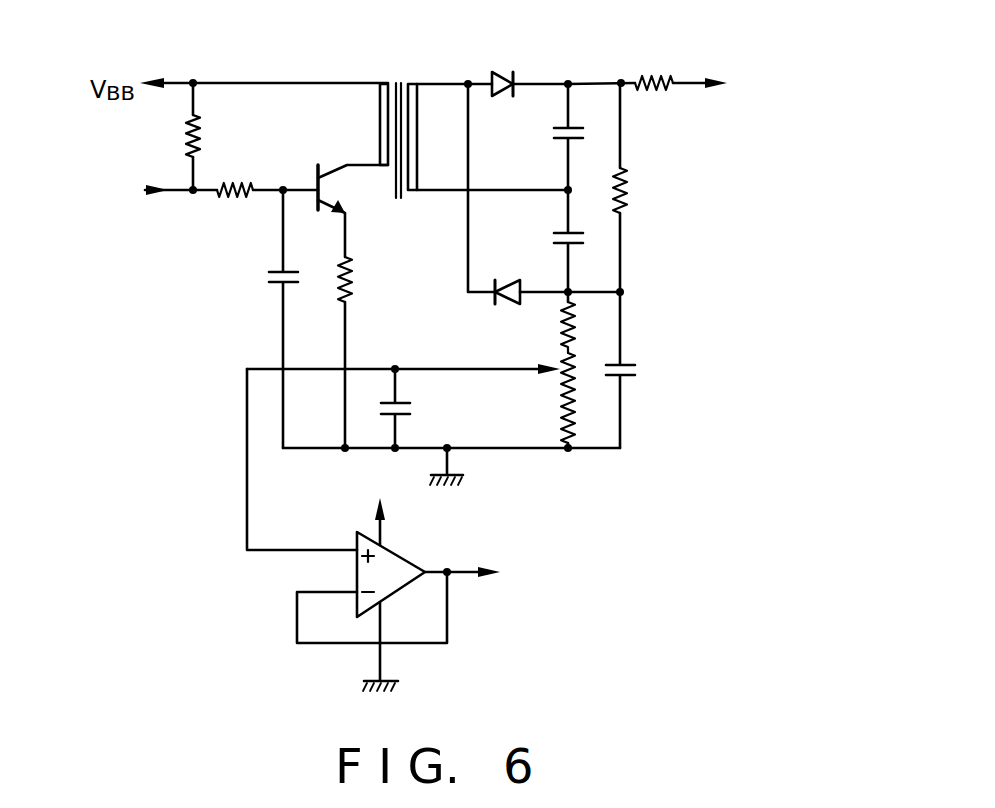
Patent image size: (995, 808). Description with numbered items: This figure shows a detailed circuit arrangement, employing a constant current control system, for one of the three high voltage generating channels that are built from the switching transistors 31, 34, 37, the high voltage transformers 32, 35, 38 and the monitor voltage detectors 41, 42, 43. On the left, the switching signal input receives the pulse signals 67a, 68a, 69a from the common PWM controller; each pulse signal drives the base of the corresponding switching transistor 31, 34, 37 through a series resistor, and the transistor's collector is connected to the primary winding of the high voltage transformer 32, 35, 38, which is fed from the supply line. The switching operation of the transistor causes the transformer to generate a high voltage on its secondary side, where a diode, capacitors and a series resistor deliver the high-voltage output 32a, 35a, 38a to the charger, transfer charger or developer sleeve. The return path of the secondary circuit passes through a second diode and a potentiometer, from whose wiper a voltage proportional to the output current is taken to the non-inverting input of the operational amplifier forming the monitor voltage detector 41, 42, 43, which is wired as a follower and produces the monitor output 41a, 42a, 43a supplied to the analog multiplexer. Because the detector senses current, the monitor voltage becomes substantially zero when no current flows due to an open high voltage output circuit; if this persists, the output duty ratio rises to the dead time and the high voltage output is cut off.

The switching transistor 31 is at (315, 181).
The switching transistor 34 is at (315, 181).
The switching transistor 37 is at (322, 166).
The high voltage transformer for charging 32 is at (459, 107).
The high voltage transformer for transferring 35 is at (459, 107).
The high voltage transformer for biasing 38 is at (400, 82).
The monitor voltage detector 41 is at (403, 578).
The monitor voltage detector 42 is at (403, 578).
The monitor voltage detector 43 is at (404, 559).
The high voltage output 32a is at (769, 121).
The high voltage output 35a is at (769, 121).
The high voltage output 38a is at (769, 121).
The pulse signal 67a is at (127, 219).
The pulse signal 68a is at (127, 219).
The pulse signal 69a is at (127, 219).
The monitor output 41a is at (560, 597).
The monitor output 42a is at (560, 597).
The monitor output 43a is at (560, 597).